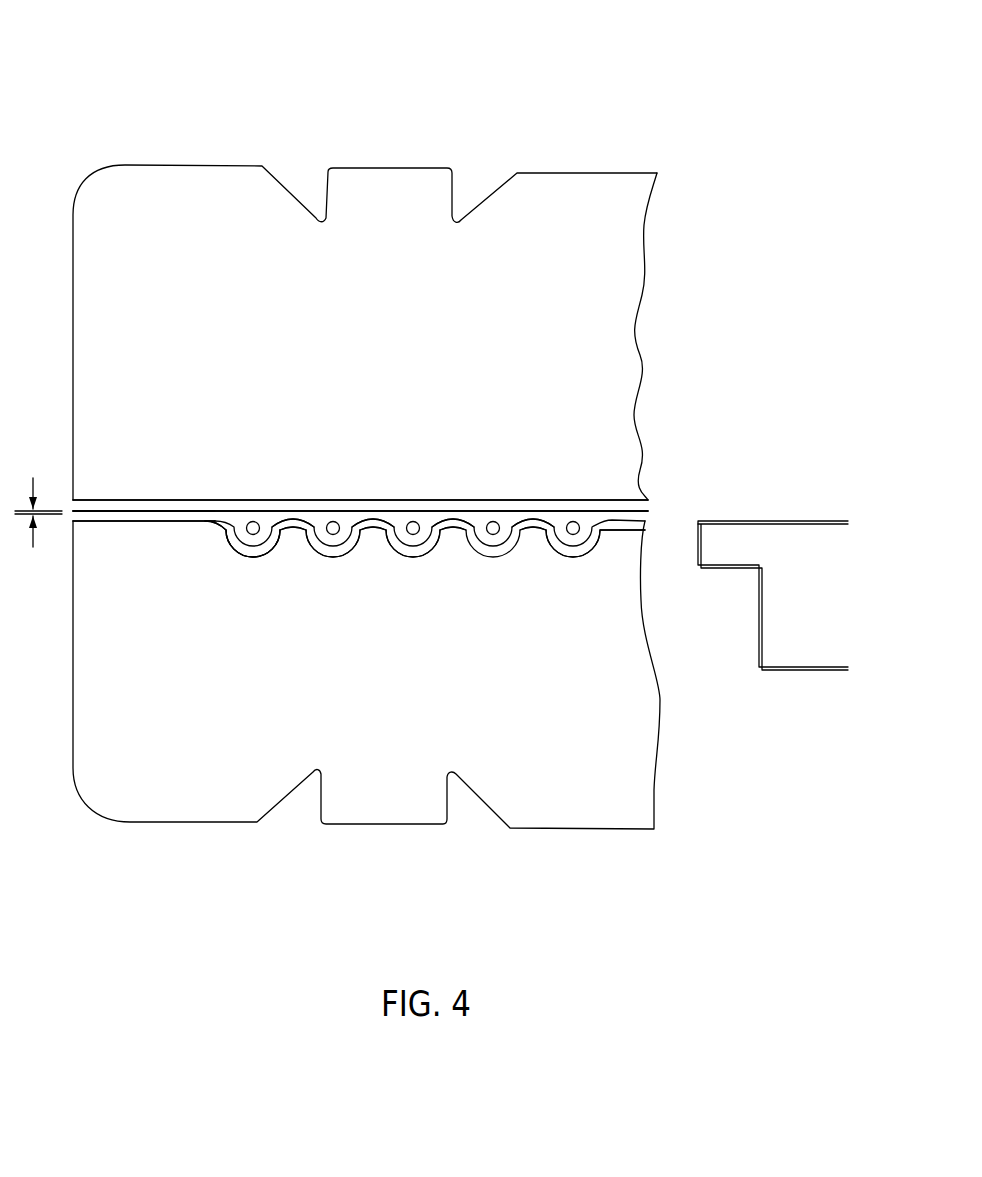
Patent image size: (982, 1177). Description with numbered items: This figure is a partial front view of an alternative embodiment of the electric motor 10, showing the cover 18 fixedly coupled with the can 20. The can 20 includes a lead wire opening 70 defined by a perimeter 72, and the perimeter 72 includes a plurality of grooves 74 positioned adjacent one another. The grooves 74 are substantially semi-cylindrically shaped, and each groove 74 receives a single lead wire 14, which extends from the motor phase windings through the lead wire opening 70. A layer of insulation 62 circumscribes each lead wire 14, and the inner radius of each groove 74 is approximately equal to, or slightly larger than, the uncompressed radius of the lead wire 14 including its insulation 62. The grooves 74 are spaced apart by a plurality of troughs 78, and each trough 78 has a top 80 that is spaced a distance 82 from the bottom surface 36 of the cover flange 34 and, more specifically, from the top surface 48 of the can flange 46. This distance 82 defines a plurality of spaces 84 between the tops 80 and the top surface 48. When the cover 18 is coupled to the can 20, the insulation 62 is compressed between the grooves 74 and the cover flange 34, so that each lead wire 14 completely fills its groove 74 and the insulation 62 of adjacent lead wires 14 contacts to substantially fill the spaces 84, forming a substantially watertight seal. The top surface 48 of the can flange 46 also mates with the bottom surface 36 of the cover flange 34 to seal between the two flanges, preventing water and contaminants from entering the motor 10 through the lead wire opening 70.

The electric motor 10 is at (396, 60).
The lead wire 14 is at (253, 520).
The cover 18 is at (600, 205).
The can 20 is at (142, 796).
The cover flange 34 is at (171, 507).
The bottom surface 36 is at (105, 522).
The can flange 46 is at (149, 522).
The top surface 48 is at (141, 509).
The insulation 62 is at (233, 521).
The lead wire opening 70 is at (420, 543).
The perimeter 72 is at (243, 554).
The groove 74 is at (332, 552).
The trough 78 is at (300, 563).
The top 80 is at (293, 542).
The distance 82 is at (38, 524).
The space 84 is at (292, 519).